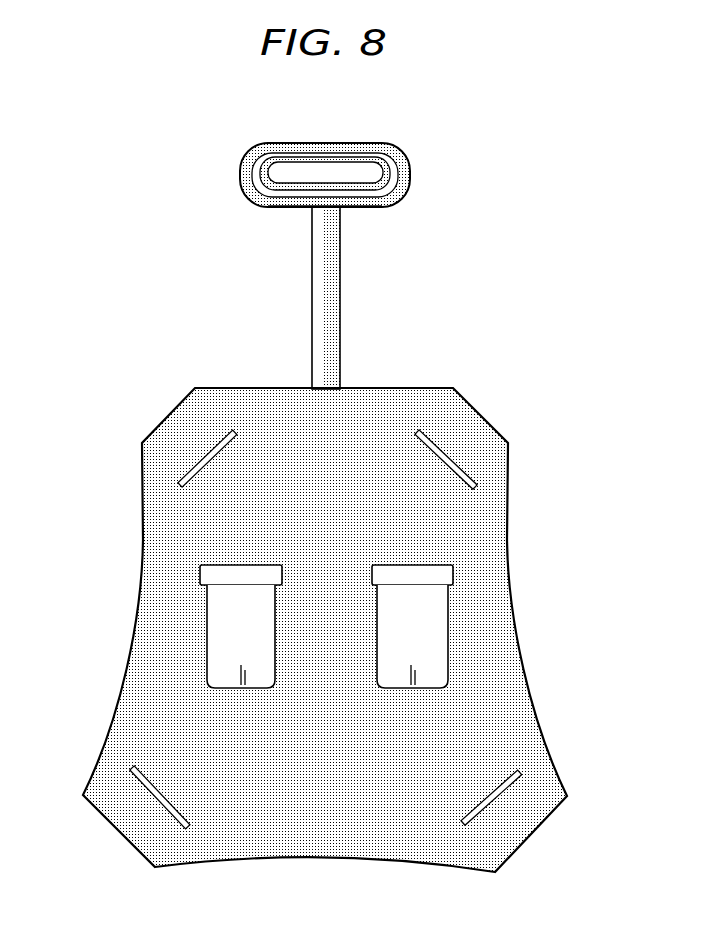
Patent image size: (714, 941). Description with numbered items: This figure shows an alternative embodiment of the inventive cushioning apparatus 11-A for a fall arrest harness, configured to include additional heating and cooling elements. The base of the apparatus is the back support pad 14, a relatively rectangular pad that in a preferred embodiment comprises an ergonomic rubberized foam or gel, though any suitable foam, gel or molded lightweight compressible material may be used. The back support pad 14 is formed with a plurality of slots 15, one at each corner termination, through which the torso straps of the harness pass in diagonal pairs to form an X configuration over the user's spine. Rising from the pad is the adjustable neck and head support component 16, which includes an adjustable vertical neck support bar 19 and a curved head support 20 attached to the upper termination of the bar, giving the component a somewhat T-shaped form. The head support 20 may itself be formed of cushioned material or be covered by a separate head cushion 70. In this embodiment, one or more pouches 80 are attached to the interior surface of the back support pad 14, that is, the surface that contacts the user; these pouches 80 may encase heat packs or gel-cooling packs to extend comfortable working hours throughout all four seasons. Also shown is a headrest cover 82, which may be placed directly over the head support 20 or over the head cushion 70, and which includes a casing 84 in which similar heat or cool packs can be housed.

The cushioning apparatus 11-A is at (150, 124).
The back support pad 14 is at (510, 718).
The slots 15 is at (497, 803).
The adjustable neck and head support component 16 is at (208, 140).
The vertical neck support bar 19 is at (340, 295).
The curved head support 20 is at (396, 175).
The head cushion 70 is at (338, 155).
The pouches 80 is at (377, 625).
The headrest cover 82 is at (283, 209).
The casing 84 is at (308, 162).